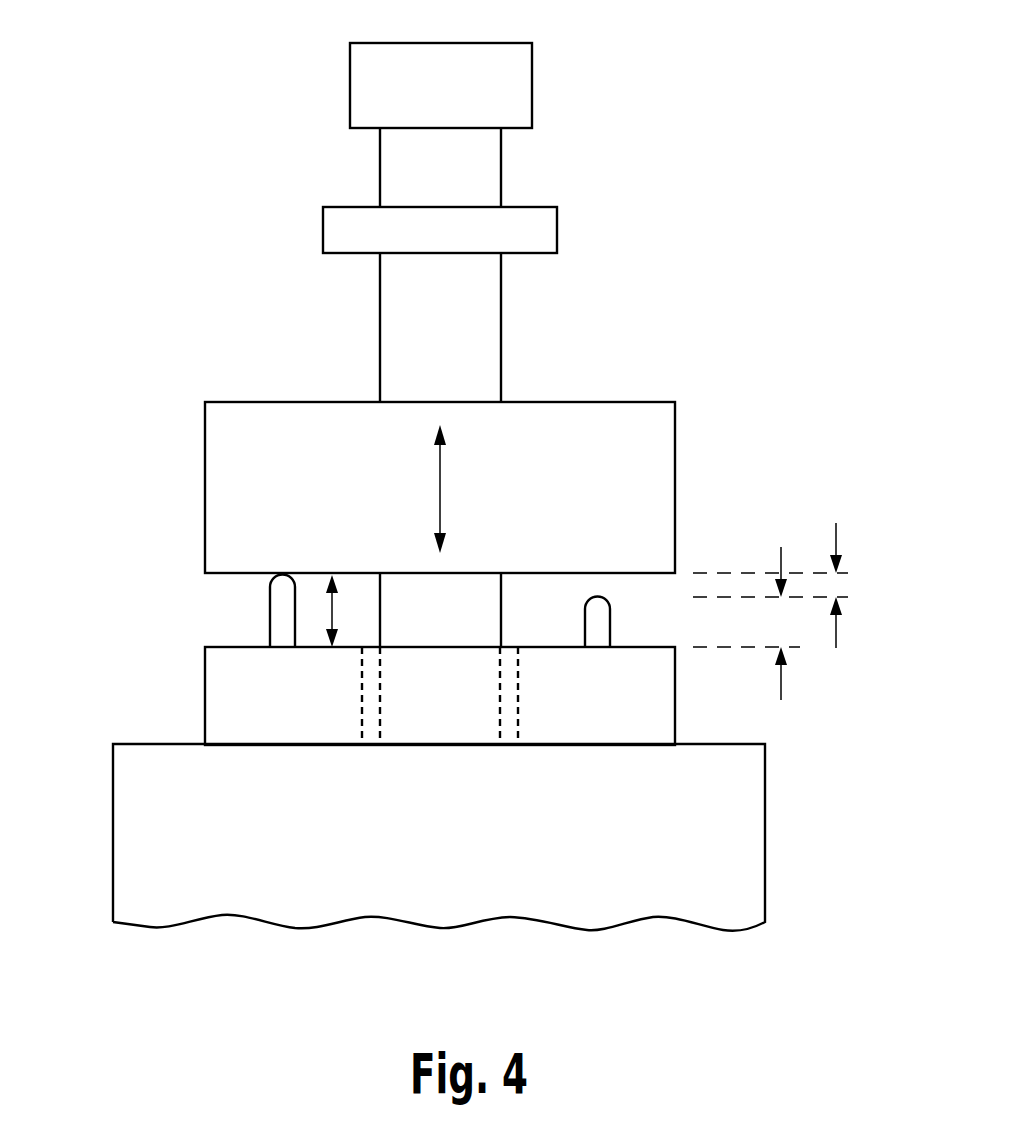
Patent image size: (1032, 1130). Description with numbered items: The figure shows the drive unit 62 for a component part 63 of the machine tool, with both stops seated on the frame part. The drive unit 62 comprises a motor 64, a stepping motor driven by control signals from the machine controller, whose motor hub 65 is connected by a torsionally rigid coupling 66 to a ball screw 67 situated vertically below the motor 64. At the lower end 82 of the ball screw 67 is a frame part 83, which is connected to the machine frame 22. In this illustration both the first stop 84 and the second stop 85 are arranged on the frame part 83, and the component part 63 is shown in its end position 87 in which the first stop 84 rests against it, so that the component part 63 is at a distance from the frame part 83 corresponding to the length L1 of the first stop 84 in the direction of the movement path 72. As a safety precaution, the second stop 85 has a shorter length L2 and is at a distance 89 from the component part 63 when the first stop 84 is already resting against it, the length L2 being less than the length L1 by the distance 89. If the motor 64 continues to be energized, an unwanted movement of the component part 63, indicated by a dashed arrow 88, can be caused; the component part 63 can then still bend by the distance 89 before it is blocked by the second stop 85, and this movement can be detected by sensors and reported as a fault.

The machine frame 22 is at (128, 805).
The drive unit 62 is at (655, 76).
The component part 63 is at (222, 491).
The motor 64 is at (366, 84).
The motor hub 65 is at (394, 170).
The torsionally rigid coupling 66 is at (342, 233).
The ball screw 67 is at (394, 327).
The movement path 72 is at (440, 488).
The lower end 82 is at (441, 668).
The frame part 83 is at (222, 697).
The first stop 84 is at (282, 628).
The second stop 85 is at (598, 635).
The end position 87 is at (690, 342).
The dashed arrow 88 is at (640, 608).
The distance 89 is at (836, 635).
The length of the first stop L1 is at (332, 599).
The length of the second stop L2 is at (781, 685).